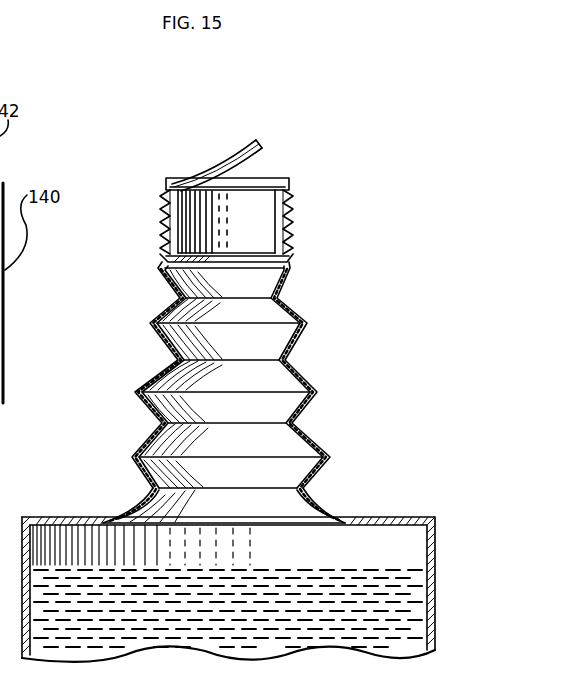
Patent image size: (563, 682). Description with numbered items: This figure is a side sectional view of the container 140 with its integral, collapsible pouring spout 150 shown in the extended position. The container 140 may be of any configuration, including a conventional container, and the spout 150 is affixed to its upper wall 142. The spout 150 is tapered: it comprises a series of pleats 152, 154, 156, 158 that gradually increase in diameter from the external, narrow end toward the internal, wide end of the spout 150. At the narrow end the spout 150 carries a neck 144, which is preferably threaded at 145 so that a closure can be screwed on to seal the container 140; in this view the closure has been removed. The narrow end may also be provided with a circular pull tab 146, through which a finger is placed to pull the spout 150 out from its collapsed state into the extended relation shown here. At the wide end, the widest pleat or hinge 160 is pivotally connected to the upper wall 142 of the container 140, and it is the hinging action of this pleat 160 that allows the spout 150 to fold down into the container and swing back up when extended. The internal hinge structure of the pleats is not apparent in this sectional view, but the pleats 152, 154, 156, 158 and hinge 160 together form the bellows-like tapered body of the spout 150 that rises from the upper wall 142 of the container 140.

The container 140 is at (432, 525).
The upper wall 142 is at (48, 517).
The neck 144 is at (283, 178).
The threads 145 is at (293, 218).
The pull tab 146 is at (222, 168).
The pouring spout 150 is at (292, 372).
The pleat 152 is at (160, 264).
The pleat 154 is at (148, 322).
The pleat 156 is at (135, 392).
The pleat 158 is at (128, 456).
The widest pleat or hinge 160 is at (112, 517).